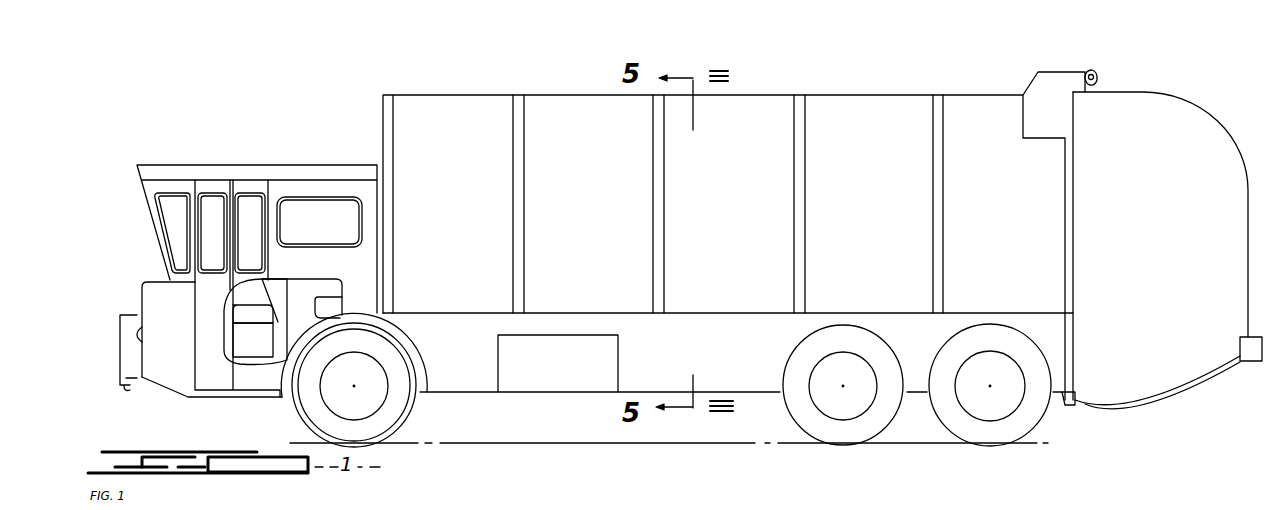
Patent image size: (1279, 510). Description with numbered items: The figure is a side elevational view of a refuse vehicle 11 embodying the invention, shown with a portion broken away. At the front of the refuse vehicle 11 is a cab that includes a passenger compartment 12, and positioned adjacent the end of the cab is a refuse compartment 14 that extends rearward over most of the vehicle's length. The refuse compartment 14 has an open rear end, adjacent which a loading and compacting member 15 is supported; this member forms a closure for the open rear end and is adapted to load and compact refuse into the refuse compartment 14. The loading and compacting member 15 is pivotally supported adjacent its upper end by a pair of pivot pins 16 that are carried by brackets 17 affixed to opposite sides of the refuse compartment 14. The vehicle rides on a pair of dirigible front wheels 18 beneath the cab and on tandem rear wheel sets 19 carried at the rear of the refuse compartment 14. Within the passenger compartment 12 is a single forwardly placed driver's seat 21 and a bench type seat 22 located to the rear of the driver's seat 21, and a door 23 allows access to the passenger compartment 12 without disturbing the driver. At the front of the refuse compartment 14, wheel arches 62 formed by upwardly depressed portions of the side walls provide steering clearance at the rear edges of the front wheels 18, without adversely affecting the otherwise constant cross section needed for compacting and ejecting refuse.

The refuse vehicle 11 is at (345, 140).
The passenger compartment 12 is at (236, 160).
The refuse compartment 14 is at (600, 196).
The loading and compacting member 15 is at (1175, 236).
The pivot pins 16 is at (1098, 78).
The brackets 17 is at (1037, 130).
The dirigible front wheels 18 is at (387, 345).
The tandem rear wheel sets 19 is at (885, 350).
The driver's seat 21 is at (237, 313).
The bench type seat 22 is at (333, 303).
The door 23 is at (192, 290).
The wheel arches 62 is at (417, 357).